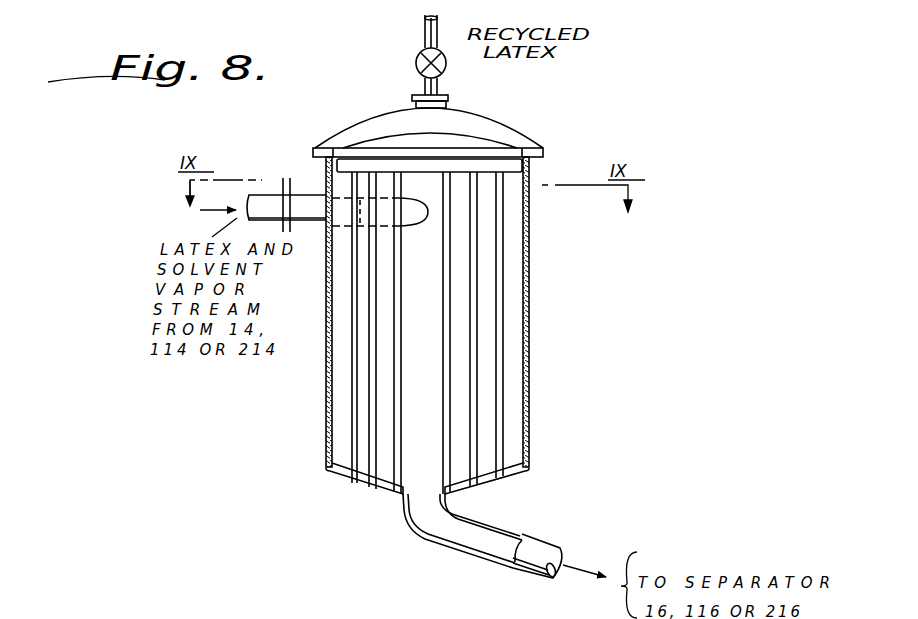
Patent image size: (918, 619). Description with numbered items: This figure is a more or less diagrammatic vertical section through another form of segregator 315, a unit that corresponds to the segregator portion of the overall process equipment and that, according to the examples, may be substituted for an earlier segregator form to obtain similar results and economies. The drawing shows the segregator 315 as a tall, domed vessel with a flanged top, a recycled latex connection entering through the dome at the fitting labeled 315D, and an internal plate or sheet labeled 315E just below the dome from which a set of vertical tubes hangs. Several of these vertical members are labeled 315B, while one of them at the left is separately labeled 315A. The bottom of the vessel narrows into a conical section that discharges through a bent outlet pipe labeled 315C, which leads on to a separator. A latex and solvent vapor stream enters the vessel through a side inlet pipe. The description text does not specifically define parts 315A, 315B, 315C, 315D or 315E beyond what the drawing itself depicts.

The segregator 315 is at (529, 373).
The tube 315A is at (362, 482).
The tubes 315B is at (503, 432).
The outlet pipe 315C is at (528, 517).
The recycled latex inlet valve 315D is at (438, 88).
The tube sheet plate 315E is at (493, 167).